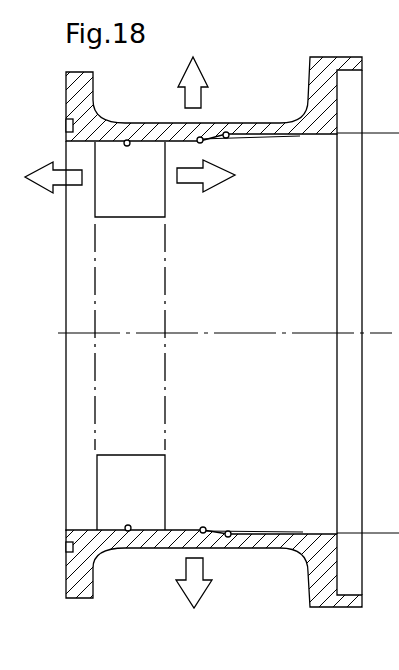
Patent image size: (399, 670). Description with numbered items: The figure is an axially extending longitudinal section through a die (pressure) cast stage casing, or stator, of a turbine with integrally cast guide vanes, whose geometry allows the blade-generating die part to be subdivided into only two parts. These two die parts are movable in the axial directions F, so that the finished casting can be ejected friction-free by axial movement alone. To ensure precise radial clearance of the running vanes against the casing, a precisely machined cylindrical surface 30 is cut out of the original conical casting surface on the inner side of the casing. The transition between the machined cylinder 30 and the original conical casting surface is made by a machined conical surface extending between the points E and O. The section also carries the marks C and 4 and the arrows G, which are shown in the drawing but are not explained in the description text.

The recess / cavity region 4 is at (130, 336).
The machined cylindrical surface 30 is at (250, 530).
The point C is at (127, 335).
The point E is at (194, 335).
The point O is at (228, 334).
The force direction G is at (194, 335).
The axial direction F is at (128, 176).